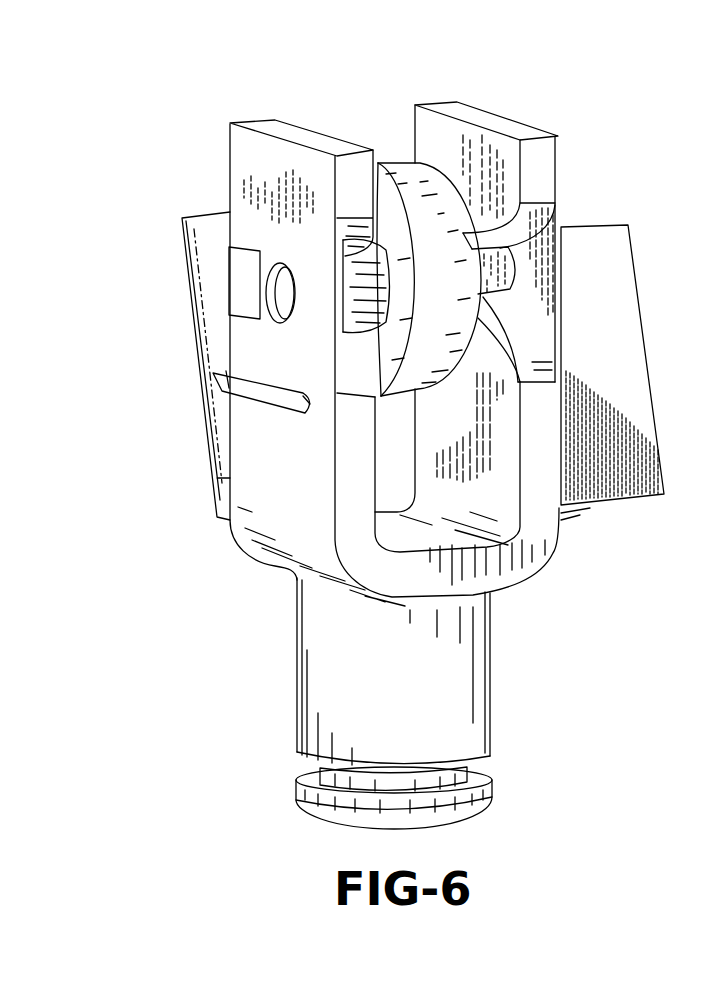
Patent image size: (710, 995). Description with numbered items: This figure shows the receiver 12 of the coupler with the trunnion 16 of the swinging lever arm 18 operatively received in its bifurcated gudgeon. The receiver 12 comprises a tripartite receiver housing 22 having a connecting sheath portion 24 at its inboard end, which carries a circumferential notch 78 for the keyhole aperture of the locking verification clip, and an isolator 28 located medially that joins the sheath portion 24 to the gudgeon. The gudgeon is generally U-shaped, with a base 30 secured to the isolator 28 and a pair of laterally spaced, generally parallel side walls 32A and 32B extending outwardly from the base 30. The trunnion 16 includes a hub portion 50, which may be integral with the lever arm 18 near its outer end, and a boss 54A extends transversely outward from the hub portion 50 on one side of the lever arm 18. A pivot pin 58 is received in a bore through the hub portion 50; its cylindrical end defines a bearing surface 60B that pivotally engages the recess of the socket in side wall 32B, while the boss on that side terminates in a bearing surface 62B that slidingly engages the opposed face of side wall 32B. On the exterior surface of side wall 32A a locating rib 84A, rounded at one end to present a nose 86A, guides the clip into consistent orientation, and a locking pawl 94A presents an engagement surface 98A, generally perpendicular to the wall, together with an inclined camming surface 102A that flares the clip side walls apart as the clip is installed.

The receiver 12 is at (238, 549).
The trunnion 16 is at (522, 248).
The lever arm 18 is at (623, 481).
The receiver housing 22 is at (290, 700).
The connecting sheath portion 24 is at (470, 808).
The isolator 28 is at (460, 702).
The base 30 is at (428, 567).
The side wall 32A is at (300, 130).
The side wall 32B is at (496, 115).
The hub portion 50 is at (418, 320).
The boss 54A is at (368, 273).
The pivot pin 58 is at (285, 286).
The bearing surface 60B is at (505, 283).
The bearing surface 62B is at (488, 297).
The circumferential notch 78 is at (492, 769).
The locating rib 84A is at (227, 387).
The nose 86A is at (307, 413).
The locking pawl 94A is at (242, 250).
The engagement surface 98A is at (225, 270).
The inclined camming surface 102A is at (240, 283).